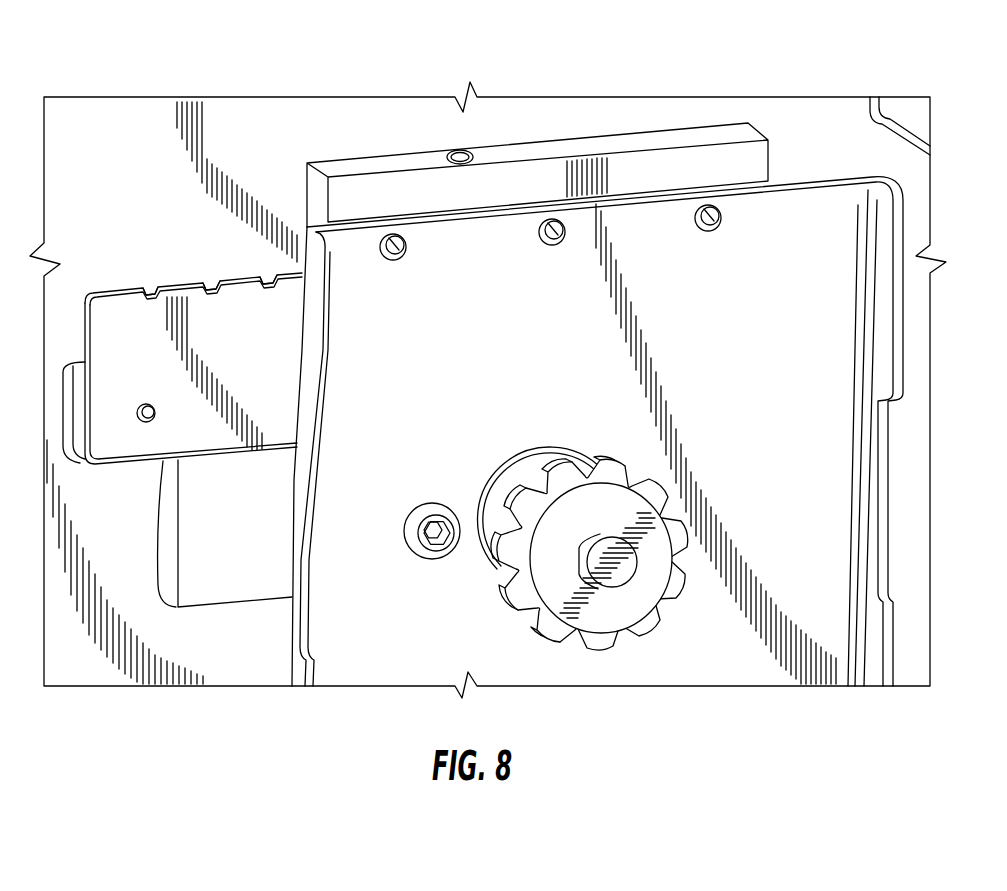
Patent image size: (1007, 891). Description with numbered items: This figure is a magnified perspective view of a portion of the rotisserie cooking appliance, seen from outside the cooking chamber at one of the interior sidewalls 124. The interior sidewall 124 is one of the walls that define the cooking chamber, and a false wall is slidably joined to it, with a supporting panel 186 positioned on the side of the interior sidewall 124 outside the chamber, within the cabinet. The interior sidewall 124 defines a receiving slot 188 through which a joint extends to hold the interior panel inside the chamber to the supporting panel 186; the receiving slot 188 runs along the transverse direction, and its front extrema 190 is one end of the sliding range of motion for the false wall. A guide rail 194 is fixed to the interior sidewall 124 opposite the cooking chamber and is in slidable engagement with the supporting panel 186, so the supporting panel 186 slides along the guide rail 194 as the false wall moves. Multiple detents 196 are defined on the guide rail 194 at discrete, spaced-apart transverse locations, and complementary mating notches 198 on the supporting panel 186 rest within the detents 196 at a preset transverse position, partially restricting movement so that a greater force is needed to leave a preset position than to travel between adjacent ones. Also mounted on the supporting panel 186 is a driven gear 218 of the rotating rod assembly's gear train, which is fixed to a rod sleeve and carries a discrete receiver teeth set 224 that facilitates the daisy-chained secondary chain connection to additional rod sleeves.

The interior sidewall 124 is at (118, 123).
The supporting panel 186 is at (807, 268).
The receiving slot 188 is at (258, 575).
The front extrema 190 is at (157, 547).
The guide rail 194 is at (130, 385).
The detents 196 is at (268, 273).
The mating notches 198 is at (401, 257).
The driven gear 218 is at (650, 580).
The receiver teeth set 224 is at (647, 471).